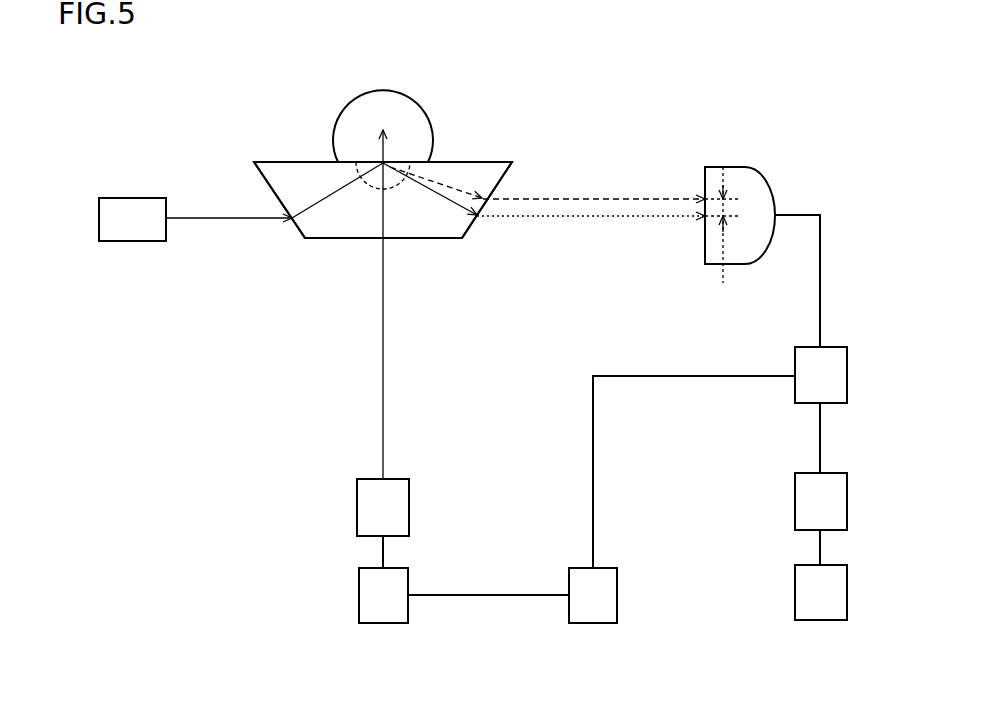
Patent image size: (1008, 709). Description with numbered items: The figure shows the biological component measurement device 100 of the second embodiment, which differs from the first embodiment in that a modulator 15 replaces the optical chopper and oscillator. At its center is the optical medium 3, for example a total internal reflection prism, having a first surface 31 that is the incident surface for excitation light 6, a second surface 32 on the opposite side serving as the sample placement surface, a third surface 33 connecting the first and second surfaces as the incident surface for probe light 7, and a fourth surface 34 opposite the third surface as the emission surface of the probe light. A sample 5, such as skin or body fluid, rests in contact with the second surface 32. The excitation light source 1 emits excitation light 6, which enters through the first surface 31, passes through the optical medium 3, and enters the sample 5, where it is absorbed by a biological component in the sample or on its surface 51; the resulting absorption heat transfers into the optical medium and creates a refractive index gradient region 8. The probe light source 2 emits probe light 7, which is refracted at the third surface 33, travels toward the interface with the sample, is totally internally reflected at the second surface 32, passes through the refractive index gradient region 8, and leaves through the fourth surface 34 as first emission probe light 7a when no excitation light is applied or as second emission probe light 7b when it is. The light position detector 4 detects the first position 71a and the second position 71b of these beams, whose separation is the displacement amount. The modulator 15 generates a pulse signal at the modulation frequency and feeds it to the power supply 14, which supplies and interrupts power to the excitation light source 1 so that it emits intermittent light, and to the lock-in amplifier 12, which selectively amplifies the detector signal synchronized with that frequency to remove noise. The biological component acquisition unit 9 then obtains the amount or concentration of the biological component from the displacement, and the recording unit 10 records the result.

The biological component measurement device 100 is at (819, 73).
The excitation light source 1 is at (410, 512).
The probe light source 2 is at (146, 198).
The optical medium 3 is at (317, 240).
The first surface 31 is at (441, 240).
The second surface 32 is at (468, 162).
The third surface 33 is at (264, 177).
The fourth surface 34 is at (506, 172).
The light position detector 4 is at (726, 167).
The sample 5 is at (410, 93).
The surface of sample 51 is at (337, 176).
The excitation light 6 is at (386, 434).
The probe light 7 is at (213, 220).
The first emission probe light 7a is at (614, 218).
The second emission probe light 7b is at (626, 199).
The first position 71a is at (705, 217).
The second position 71b is at (705, 199).
The refractive index gradient region 8 is at (372, 190).
The biological component acquisition unit 9 is at (795, 510).
The recording unit 10 is at (795, 596).
The lock-in amplifier 12 is at (795, 365).
The power supply 14 is at (359, 597).
The modulator 15 is at (594, 624).